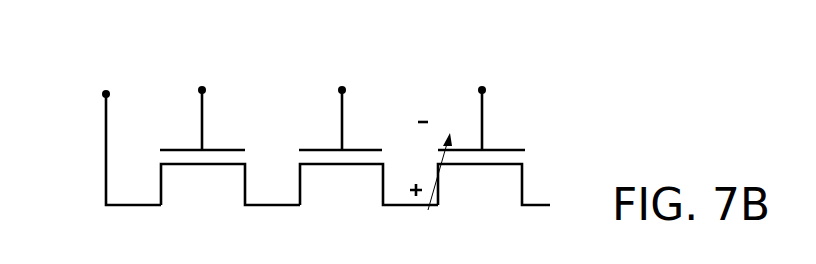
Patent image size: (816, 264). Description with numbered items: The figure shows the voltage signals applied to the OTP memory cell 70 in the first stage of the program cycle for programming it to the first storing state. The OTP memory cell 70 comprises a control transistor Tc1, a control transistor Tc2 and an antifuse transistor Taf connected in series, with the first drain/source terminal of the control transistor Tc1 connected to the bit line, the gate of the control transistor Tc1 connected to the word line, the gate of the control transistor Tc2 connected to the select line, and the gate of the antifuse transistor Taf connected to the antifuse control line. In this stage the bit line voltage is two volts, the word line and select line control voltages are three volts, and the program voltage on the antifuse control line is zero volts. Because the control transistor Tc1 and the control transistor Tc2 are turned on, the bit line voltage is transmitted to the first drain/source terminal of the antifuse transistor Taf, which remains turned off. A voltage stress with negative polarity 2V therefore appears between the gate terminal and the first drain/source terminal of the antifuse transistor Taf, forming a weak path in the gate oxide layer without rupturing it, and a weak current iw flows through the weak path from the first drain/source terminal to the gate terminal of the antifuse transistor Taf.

The OTP memory cell 70 is at (577, 94).
The control transistor Tc1 is at (227, 127).
The control transistor Tc2 is at (367, 127).
The antifuse transistor Taf is at (494, 137).
The weak current iw is at (466, 190).
The voltage stress with negative polarity 2V is at (427, 166).